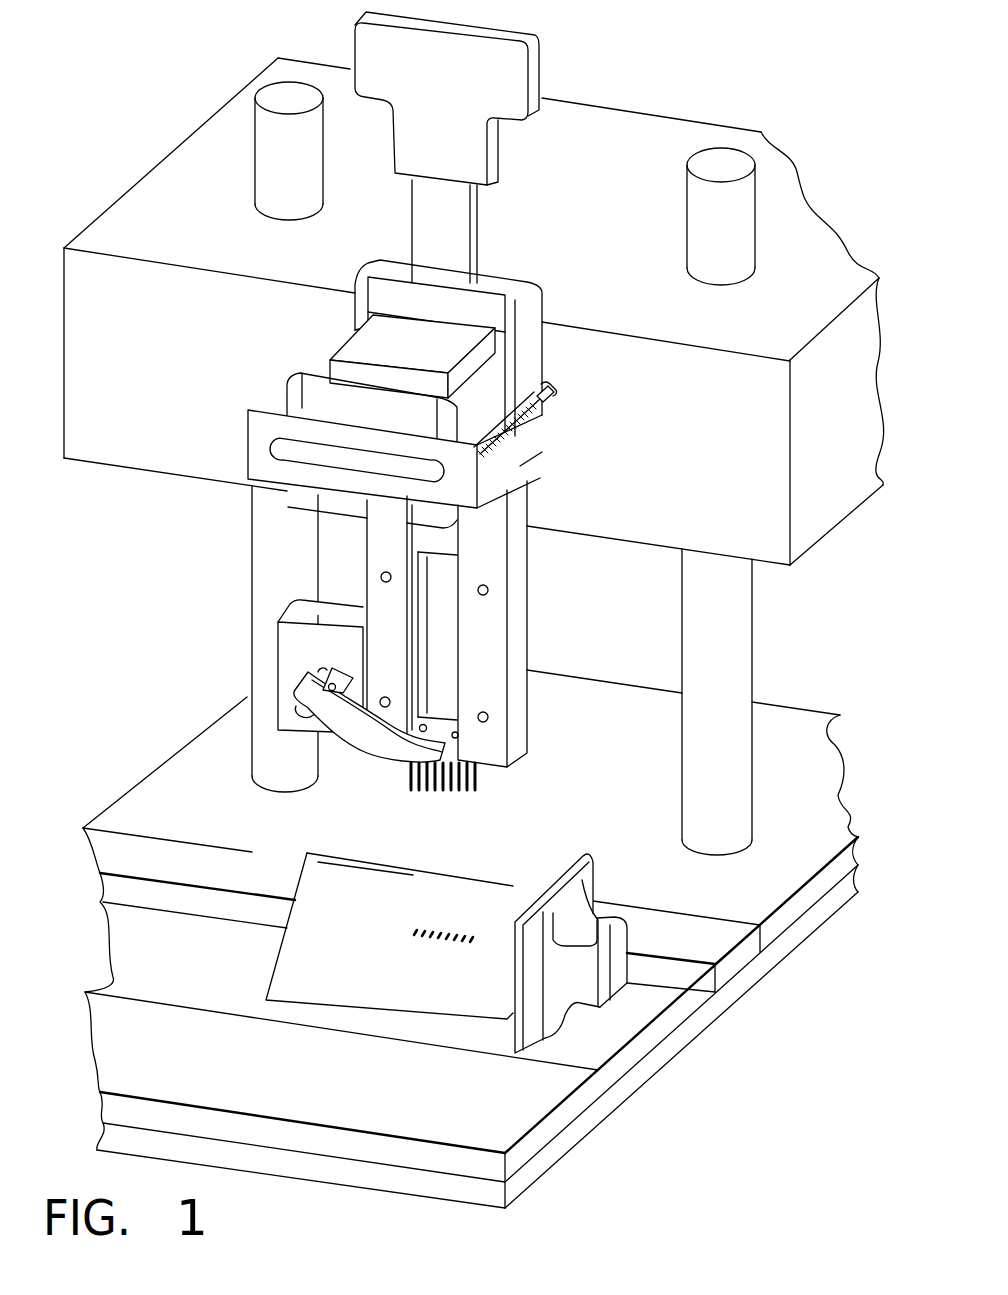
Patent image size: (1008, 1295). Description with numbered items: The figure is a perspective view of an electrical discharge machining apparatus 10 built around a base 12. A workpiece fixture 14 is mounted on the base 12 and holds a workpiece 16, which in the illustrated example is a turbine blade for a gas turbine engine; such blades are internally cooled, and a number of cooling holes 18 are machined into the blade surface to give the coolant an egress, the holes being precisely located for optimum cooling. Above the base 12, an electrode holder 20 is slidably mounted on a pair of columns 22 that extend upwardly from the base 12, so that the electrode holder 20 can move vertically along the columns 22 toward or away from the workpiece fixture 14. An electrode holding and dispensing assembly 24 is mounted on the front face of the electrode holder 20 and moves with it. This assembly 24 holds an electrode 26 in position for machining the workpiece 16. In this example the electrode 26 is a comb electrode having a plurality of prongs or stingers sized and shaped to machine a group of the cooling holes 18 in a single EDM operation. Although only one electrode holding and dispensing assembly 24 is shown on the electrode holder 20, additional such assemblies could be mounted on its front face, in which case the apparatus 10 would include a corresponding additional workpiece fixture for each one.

The electrical discharge machining apparatus 10 is at (180, 61).
The base 12 is at (638, 1073).
The workpiece fixture 14 is at (431, 1084).
The workpiece 16 is at (356, 929).
The cooling holes 18 is at (428, 927).
The electrode holder 20 is at (733, 474).
The columns 22 is at (263, 567).
The electrode holding and dispensing assembly 24 is at (573, 400).
The electrode 26 is at (445, 795).